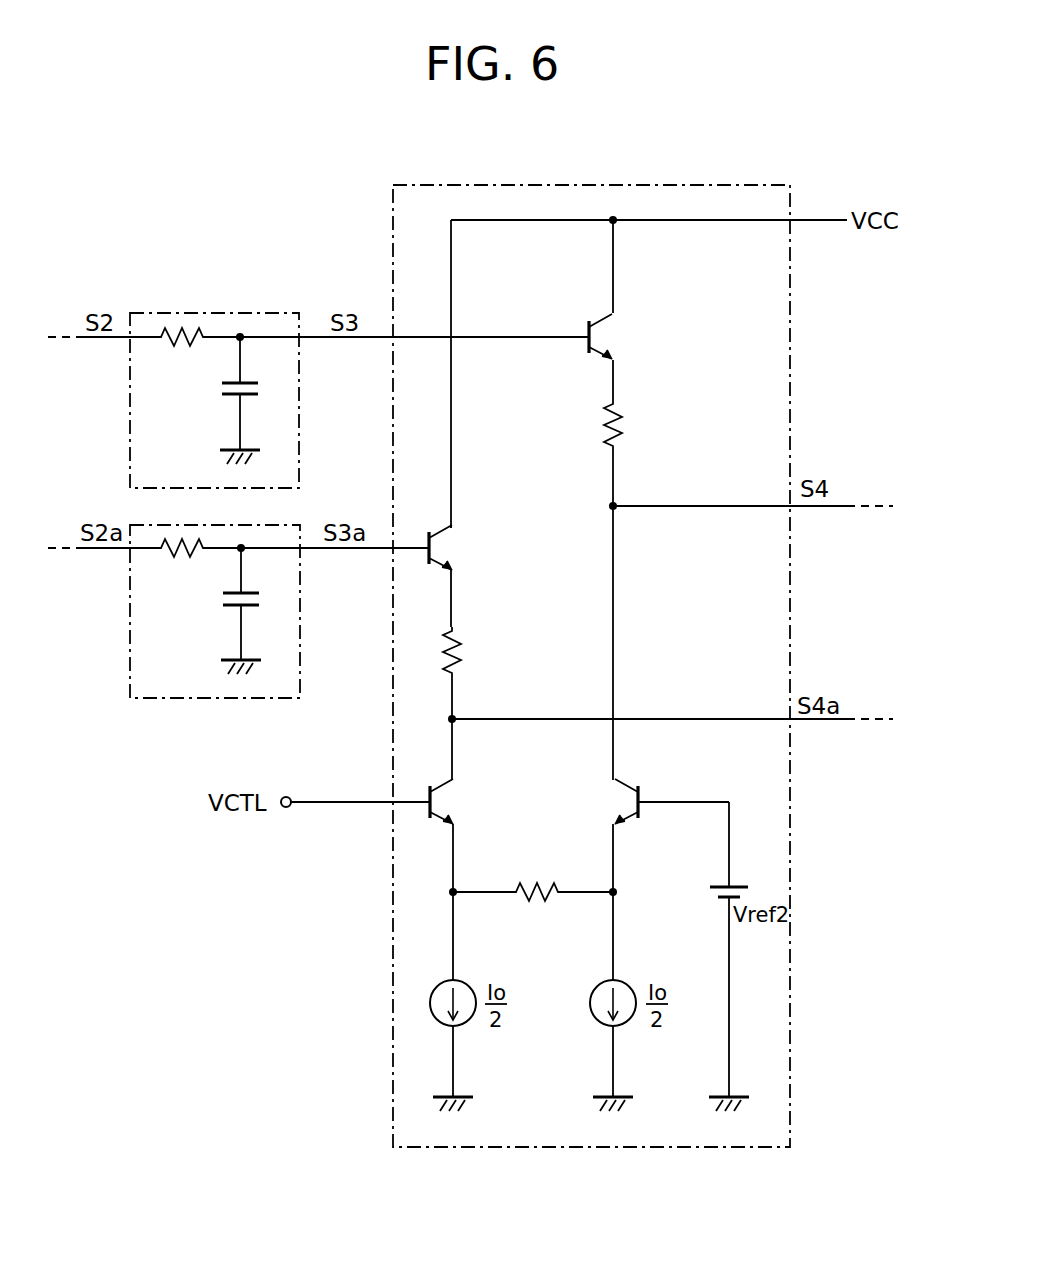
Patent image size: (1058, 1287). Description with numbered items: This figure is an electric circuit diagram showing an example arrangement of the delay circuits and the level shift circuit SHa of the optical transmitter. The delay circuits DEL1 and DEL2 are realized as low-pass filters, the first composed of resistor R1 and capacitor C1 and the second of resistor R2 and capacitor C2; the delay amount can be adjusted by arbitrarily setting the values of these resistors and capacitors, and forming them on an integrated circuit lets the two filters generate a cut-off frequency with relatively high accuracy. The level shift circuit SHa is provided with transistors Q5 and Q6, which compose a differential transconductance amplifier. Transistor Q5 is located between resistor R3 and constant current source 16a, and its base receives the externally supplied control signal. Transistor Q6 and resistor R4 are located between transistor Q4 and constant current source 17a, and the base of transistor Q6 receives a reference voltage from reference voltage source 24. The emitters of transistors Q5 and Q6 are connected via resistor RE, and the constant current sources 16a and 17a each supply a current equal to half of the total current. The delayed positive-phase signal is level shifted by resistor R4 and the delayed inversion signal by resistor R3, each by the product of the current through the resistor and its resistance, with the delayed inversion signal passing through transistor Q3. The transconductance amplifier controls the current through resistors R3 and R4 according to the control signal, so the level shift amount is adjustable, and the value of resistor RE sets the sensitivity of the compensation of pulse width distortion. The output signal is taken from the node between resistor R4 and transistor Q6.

The level shift circuit SHa is at (544, 185).
The delay circuit DEL1 is at (240, 313).
The delay circuit DEL2 is at (242, 700).
The resistor R1 is at (180, 348).
The capacitor C1 is at (250, 396).
The resistor R2 is at (180, 559).
The capacitor C2 is at (252, 607).
The resistor R3 is at (459, 651).
The resistor R4 is at (620, 426).
The resistor RE is at (537, 888).
The transistor Q3 is at (440, 530).
The transistor Q4 is at (599, 318).
The transistor Q5 is at (441, 784).
The transistor Q6 is at (626, 784).
The constant current source 16a is at (466, 982).
The constant current source 17a is at (628, 982).
The reference voltage source 24 is at (720, 888).